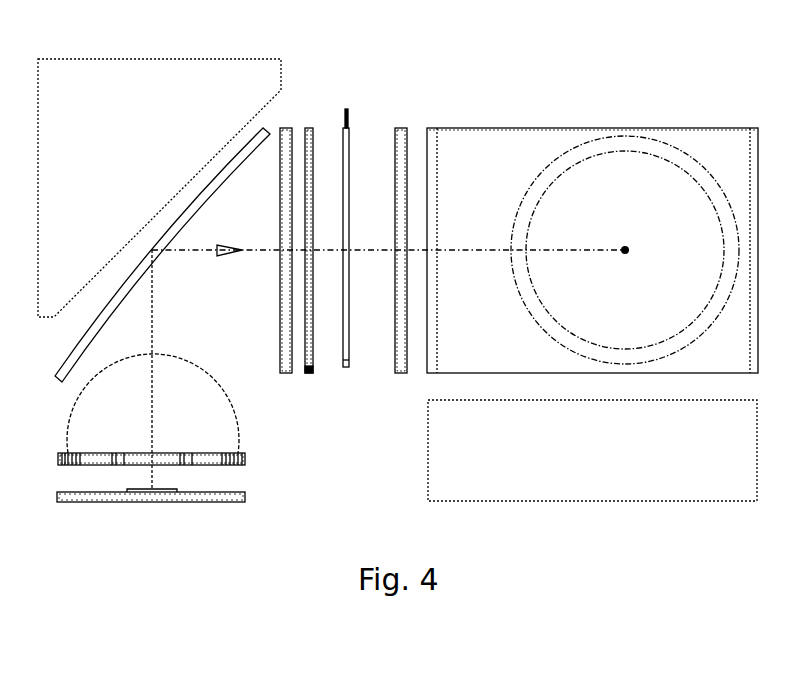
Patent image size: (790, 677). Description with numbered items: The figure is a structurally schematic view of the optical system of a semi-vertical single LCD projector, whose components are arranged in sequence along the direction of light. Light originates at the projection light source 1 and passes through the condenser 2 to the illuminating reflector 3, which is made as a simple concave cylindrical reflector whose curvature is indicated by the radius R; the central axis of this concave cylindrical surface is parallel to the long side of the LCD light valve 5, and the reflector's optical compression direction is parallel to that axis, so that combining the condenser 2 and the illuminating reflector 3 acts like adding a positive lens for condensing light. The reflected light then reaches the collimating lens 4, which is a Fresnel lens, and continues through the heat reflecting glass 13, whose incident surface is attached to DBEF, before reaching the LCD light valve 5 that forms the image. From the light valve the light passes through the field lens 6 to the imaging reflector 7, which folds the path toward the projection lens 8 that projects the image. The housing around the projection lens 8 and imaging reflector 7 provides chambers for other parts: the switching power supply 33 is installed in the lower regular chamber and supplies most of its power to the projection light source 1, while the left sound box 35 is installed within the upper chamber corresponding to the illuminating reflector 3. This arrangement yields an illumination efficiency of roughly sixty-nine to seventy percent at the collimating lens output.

The projection light source 1 is at (78, 496).
The condenser 2 is at (80, 440).
The illuminating reflector 3 is at (63, 365).
The radius R is at (222, 172).
The collimating lens 4 is at (287, 130).
The LCD light valve 5 is at (347, 133).
The field lens 6 is at (400, 130).
The imaging reflector 7 is at (543, 133).
The projection lens 8 is at (655, 150).
The heat reflecting glass 13 is at (308, 373).
The switching power supply 33 is at (440, 451).
The left sound box 35 is at (227, 64).